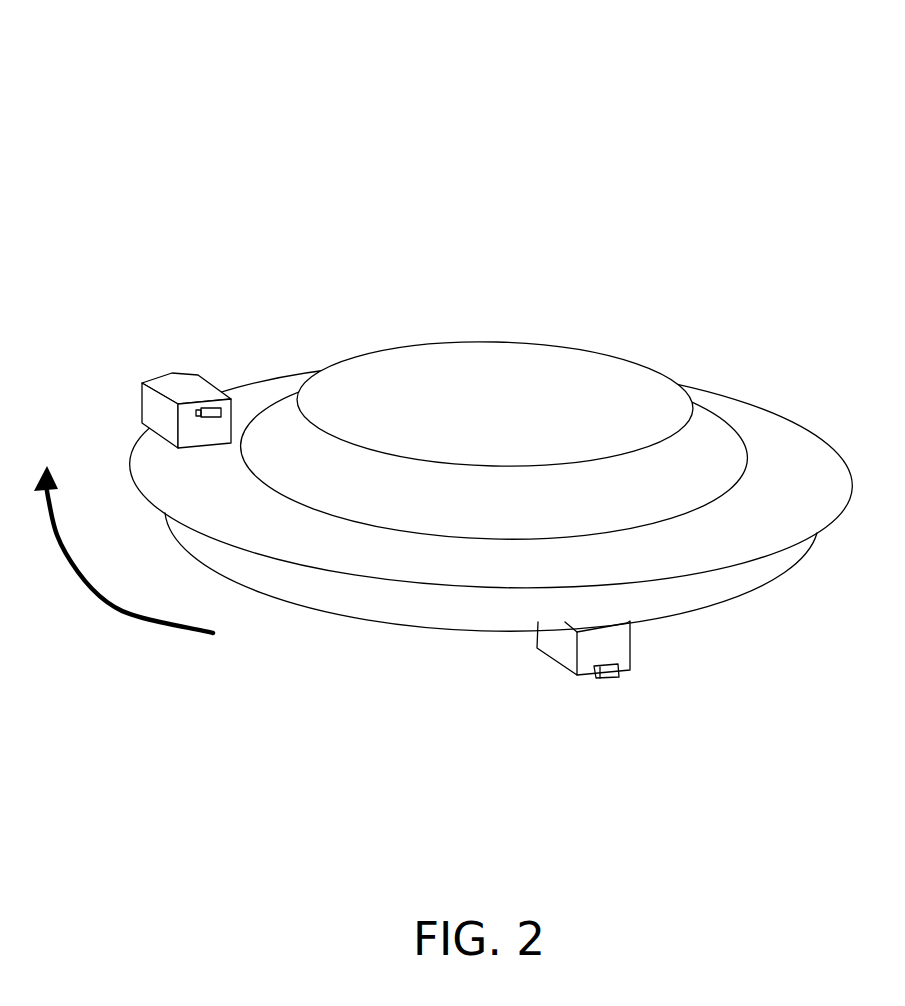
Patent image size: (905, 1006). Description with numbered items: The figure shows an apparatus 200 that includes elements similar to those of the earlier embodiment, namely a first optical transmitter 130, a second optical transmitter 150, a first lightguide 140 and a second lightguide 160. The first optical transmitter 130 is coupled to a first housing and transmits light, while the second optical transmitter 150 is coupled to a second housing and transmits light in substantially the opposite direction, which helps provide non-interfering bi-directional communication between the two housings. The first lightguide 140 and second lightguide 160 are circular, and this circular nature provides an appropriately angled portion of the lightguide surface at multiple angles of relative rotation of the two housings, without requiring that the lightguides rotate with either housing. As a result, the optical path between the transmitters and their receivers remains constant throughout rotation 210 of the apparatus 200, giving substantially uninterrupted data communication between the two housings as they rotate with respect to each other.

The apparatus 200 is at (720, 83).
The first optical transmitter 130 is at (141, 405).
The first lightguide 140 is at (827, 530).
The second optical transmitter 150 is at (600, 678).
The second lightguide 160 is at (421, 357).
The rotation 210 is at (80, 573).